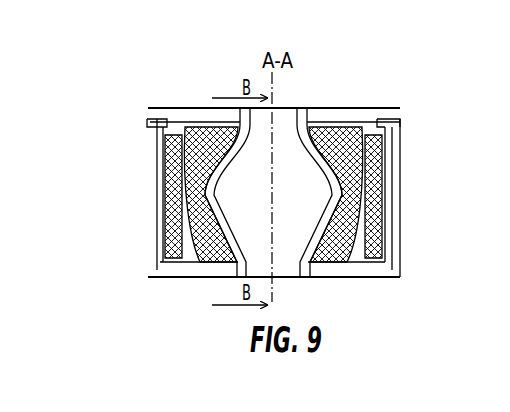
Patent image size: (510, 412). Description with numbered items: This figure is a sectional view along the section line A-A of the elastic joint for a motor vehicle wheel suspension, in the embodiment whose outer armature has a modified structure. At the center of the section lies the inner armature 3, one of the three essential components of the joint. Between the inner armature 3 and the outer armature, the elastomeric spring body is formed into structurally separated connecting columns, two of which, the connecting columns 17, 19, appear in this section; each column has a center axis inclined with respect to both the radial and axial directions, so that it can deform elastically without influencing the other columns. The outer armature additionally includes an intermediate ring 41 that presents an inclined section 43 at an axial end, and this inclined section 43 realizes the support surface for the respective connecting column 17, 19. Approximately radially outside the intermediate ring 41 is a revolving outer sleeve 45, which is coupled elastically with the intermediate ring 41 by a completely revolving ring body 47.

The inner armature 3 is at (300, 278).
The connecting column 17 is at (350, 132).
The connecting column 19 is at (197, 125).
The intermediate ring 41 is at (205, 222).
The inclined section 43 is at (360, 122).
The outer sleeve 45 is at (157, 162).
The ring body 47 is at (148, 127).